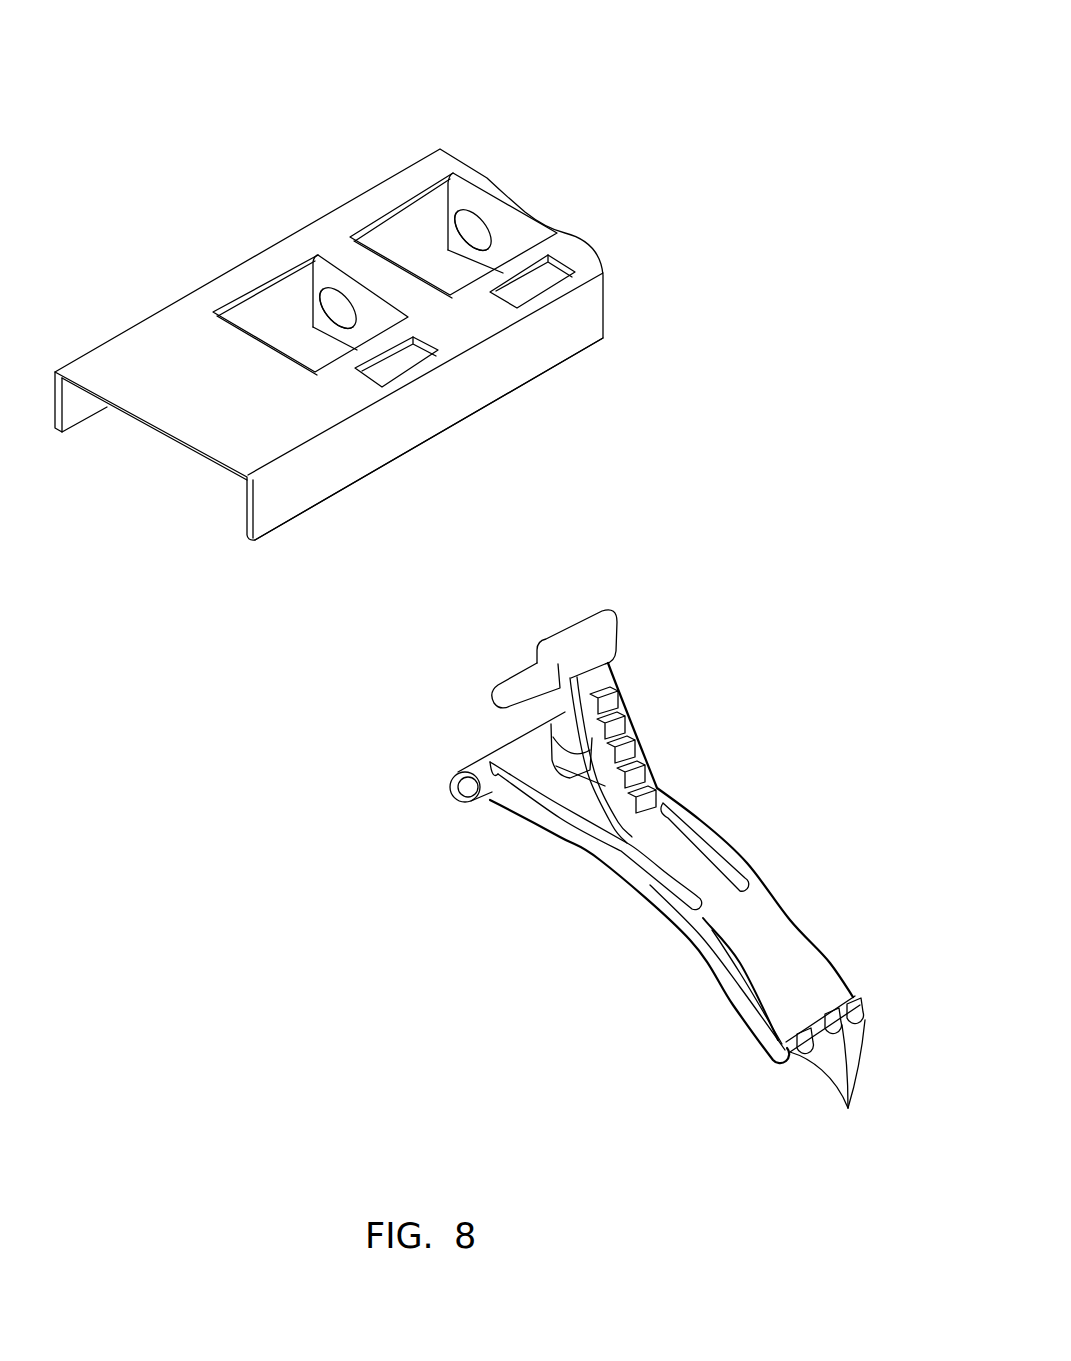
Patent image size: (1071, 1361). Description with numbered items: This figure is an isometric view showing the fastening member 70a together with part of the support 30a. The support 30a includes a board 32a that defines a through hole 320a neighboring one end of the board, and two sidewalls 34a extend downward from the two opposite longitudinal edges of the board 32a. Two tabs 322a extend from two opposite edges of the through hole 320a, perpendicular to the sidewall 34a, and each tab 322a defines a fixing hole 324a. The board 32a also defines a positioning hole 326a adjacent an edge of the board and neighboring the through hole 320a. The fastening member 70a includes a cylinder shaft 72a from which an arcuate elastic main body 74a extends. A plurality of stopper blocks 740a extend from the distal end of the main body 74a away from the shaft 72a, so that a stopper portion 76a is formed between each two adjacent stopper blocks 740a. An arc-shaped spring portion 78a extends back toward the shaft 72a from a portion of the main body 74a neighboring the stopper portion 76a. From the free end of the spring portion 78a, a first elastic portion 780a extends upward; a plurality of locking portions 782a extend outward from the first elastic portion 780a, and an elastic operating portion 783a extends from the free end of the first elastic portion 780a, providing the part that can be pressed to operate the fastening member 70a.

The support 30a is at (247, 173).
The board 32a is at (200, 402).
The sidewall 34a is at (292, 480).
The through hole 320a is at (288, 328).
The tab 322a is at (372, 314).
The fixing hole 324a is at (340, 308).
The positioning hole 326a is at (397, 357).
The fastening member 70a is at (777, 775).
The cylinder shaft 72a is at (476, 772).
The main body 74a is at (718, 932).
The stopper portion 76a is at (818, 1017).
The spring portion 78a is at (653, 845).
The stopper block 740a is at (845, 1084).
The first elastic portion 780a is at (607, 750).
The locking portion 782a is at (622, 712).
The elastic operating portion 783a is at (587, 623).